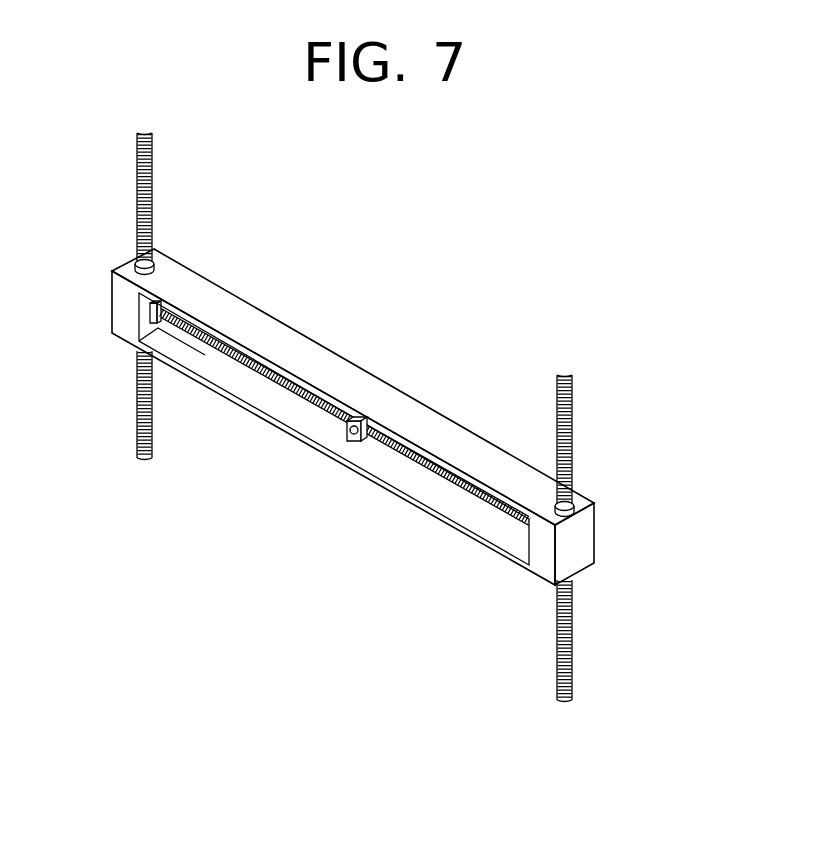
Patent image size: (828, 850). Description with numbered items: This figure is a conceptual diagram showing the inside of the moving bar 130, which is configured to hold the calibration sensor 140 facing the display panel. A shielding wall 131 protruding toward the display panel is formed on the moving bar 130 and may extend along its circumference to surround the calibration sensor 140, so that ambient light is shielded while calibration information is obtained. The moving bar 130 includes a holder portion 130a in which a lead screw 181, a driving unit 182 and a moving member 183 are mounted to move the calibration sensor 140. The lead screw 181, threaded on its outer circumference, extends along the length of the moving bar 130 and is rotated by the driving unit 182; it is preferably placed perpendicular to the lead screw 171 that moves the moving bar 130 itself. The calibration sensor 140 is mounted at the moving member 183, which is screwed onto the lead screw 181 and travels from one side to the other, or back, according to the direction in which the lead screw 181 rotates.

The moving bar 130 is at (353, 436).
The holder portion 130a is at (399, 472).
The shielding wall 131 is at (540, 548).
The calibration sensor 140 is at (317, 474).
The lead screw 171 is at (574, 432).
The lead screw 181 is at (287, 386).
The driving unit 182 is at (152, 313).
The moving member 183 is at (357, 443).